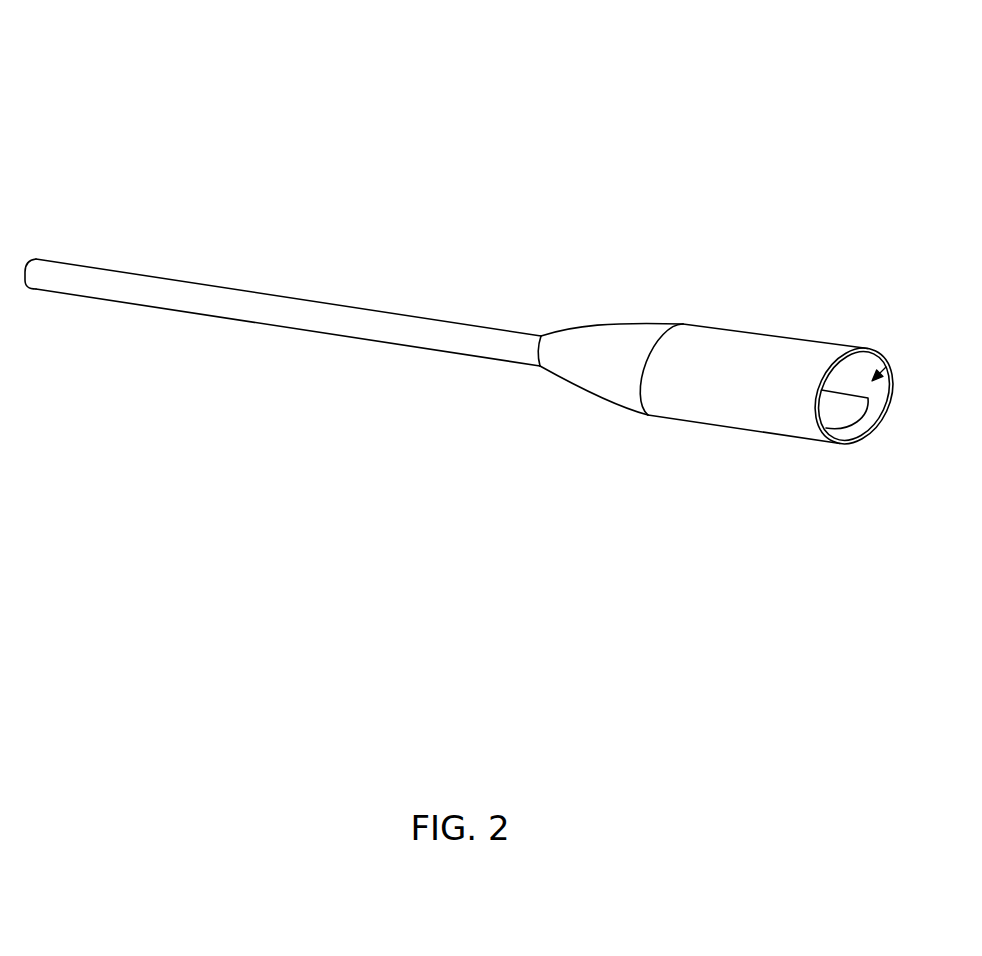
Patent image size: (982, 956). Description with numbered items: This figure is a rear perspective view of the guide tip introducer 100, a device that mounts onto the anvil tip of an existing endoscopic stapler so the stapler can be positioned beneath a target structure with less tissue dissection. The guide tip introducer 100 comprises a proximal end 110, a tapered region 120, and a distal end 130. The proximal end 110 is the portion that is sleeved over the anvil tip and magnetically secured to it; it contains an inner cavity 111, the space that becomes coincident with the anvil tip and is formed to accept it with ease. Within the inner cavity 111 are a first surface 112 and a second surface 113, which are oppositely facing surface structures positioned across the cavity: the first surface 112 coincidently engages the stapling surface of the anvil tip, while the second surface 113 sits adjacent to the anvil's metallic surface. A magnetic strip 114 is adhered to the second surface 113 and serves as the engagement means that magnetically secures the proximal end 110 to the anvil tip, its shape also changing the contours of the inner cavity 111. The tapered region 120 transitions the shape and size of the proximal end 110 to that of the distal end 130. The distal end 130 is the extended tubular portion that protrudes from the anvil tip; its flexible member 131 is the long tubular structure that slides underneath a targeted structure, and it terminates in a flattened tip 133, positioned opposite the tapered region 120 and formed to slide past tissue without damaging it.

The guide tip introducer 100 is at (465, 224).
The proximal end 110 is at (808, 381).
The inner cavity 111 is at (920, 358).
The first surface 112 is at (854, 382).
The second surface 113 is at (854, 415).
The magnetic strip 114 is at (800, 408).
The tapered region 120 is at (610, 325).
The distal end 130 is at (283, 304).
The flexible member 131 is at (288, 333).
The flattened tip 133 is at (62, 247).